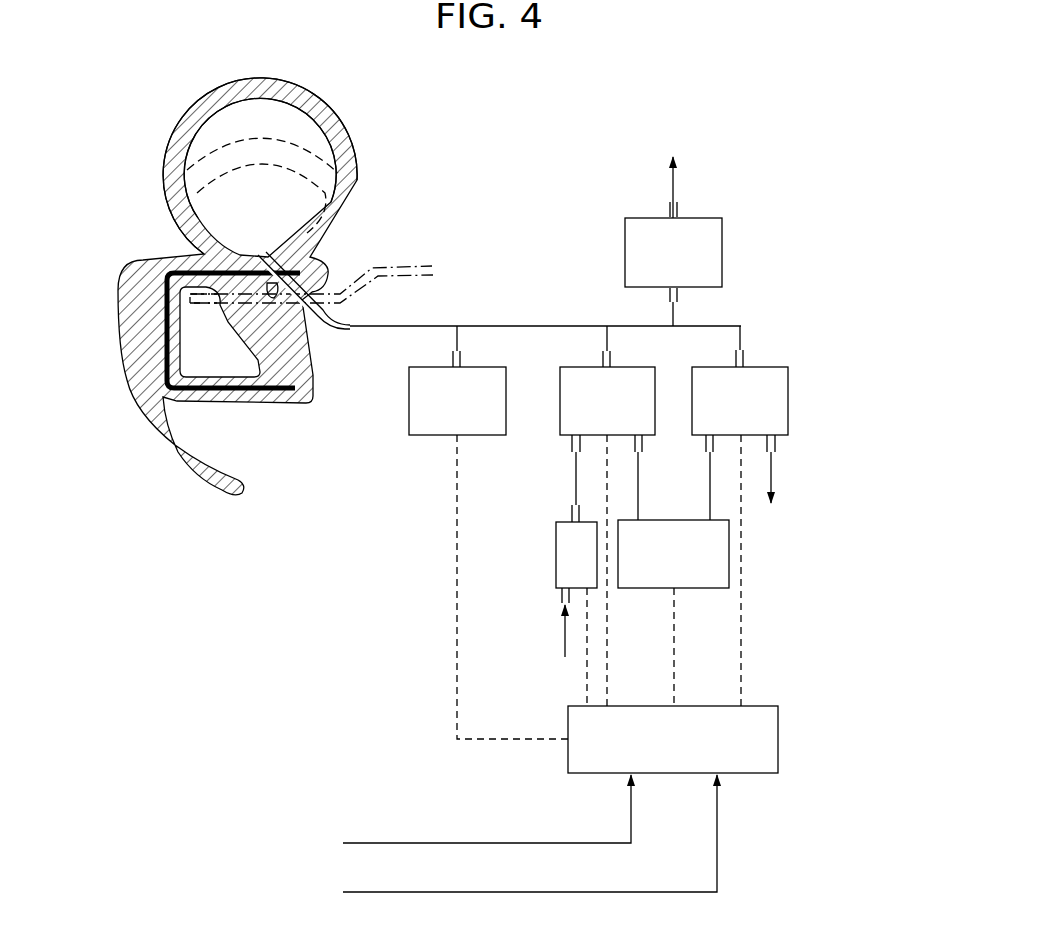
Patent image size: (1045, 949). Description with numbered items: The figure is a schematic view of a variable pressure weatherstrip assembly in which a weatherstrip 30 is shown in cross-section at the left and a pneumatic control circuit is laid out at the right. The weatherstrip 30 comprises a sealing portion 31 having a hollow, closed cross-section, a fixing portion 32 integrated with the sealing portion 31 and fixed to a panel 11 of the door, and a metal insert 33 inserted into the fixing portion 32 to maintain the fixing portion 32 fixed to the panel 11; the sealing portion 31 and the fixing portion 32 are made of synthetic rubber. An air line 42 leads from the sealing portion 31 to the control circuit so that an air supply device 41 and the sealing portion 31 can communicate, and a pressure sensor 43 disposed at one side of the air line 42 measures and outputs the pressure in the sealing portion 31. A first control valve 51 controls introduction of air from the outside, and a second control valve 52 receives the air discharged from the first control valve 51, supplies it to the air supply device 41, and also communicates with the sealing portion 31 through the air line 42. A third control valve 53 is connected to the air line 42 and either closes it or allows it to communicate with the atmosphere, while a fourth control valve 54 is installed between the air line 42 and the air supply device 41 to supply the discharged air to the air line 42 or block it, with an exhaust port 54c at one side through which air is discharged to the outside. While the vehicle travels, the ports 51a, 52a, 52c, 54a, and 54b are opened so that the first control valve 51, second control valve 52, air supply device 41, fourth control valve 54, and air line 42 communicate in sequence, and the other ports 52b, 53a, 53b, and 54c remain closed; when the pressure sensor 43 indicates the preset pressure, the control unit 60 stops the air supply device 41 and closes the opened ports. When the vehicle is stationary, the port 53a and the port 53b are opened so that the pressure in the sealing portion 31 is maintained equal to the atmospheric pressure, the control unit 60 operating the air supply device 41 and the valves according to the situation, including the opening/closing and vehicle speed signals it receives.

The panel 11 is at (426, 297).
The weatherstrip 30 is at (201, 285).
The sealing portion 31 is at (168, 163).
The fixing portion 32 is at (137, 301).
The insert 33 is at (158, 323).
The air supply device 41 is at (707, 582).
The air line 42 is at (392, 327).
The pressure sensor 43 is at (428, 418).
The first control valve 51 is at (563, 558).
The port 51a is at (570, 511).
The second control valve 52 is at (568, 417).
The port 52a is at (572, 448).
The port 52b is at (603, 358).
The port 52c is at (645, 448).
The third control valve 53 is at (715, 250).
The port 53a is at (678, 295).
The port 53b is at (678, 205).
The fourth control valve 54 is at (776, 397).
The port 54a is at (715, 442).
The port 54b is at (745, 358).
The exhaust port 54c is at (777, 442).
The control unit 60 is at (758, 740).